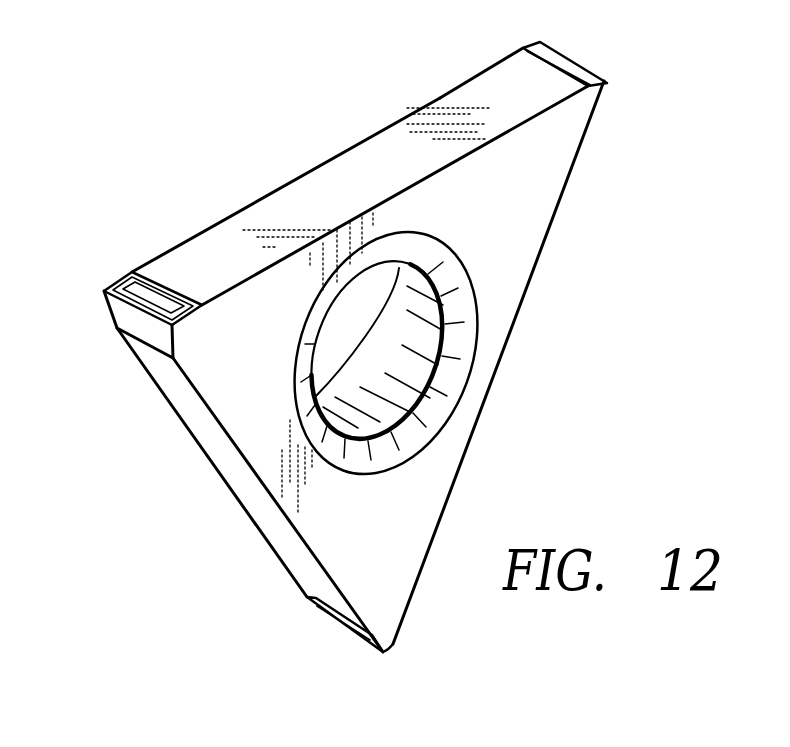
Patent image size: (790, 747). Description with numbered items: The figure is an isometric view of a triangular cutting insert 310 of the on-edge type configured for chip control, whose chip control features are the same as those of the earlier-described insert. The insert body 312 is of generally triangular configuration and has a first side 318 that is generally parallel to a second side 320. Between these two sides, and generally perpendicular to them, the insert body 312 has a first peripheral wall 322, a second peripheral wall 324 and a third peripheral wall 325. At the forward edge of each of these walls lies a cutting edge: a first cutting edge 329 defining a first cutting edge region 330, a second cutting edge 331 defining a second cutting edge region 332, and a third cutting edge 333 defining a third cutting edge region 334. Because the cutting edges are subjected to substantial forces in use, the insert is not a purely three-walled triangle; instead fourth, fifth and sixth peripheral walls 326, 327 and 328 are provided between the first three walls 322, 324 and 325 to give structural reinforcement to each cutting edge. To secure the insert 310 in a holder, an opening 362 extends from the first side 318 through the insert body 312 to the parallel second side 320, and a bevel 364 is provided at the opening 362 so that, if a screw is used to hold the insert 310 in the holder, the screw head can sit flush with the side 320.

The triangular cutting insert 310 is at (678, 268).
The insert body 312 is at (472, 402).
The first side 318 is at (281, 186).
The second side 320 is at (425, 478).
The first peripheral wall 322 is at (373, 147).
The second peripheral wall 324 is at (195, 412).
The third peripheral wall 325 is at (532, 287).
The fourth peripheral wall 326 is at (150, 331).
The fifth peripheral wall 327 is at (397, 641).
The sixth peripheral wall 328 is at (533, 48).
The first cutting edge 329 is at (124, 299).
The first cutting edge region 330 is at (118, 273).
The second cutting edge 331 is at (322, 614).
The second cutting edge region 332 is at (345, 631).
The third cutting edge 333 is at (601, 71).
The third cutting edge region 334 is at (570, 49).
The opening 362 is at (346, 330).
The bevel 364 is at (352, 452).